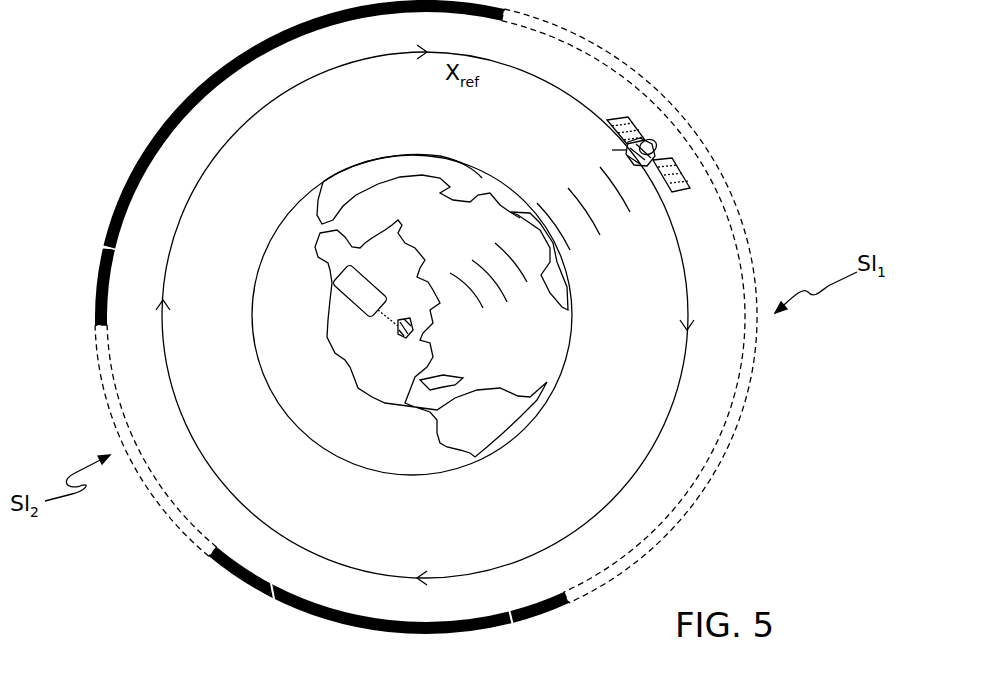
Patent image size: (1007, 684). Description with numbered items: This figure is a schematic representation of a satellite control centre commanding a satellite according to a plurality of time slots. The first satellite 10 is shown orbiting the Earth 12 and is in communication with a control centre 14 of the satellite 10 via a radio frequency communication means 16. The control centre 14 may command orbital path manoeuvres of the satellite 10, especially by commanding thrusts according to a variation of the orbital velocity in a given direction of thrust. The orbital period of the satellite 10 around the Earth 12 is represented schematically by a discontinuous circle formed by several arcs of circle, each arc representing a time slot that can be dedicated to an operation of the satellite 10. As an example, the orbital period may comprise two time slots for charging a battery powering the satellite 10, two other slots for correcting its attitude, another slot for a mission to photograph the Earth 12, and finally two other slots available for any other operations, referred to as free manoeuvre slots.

The first satellite 10 is at (676, 152).
The Earth 12 is at (576, 349).
The control centre 14 is at (365, 295).
The radio frequency communication means 16 is at (392, 333).